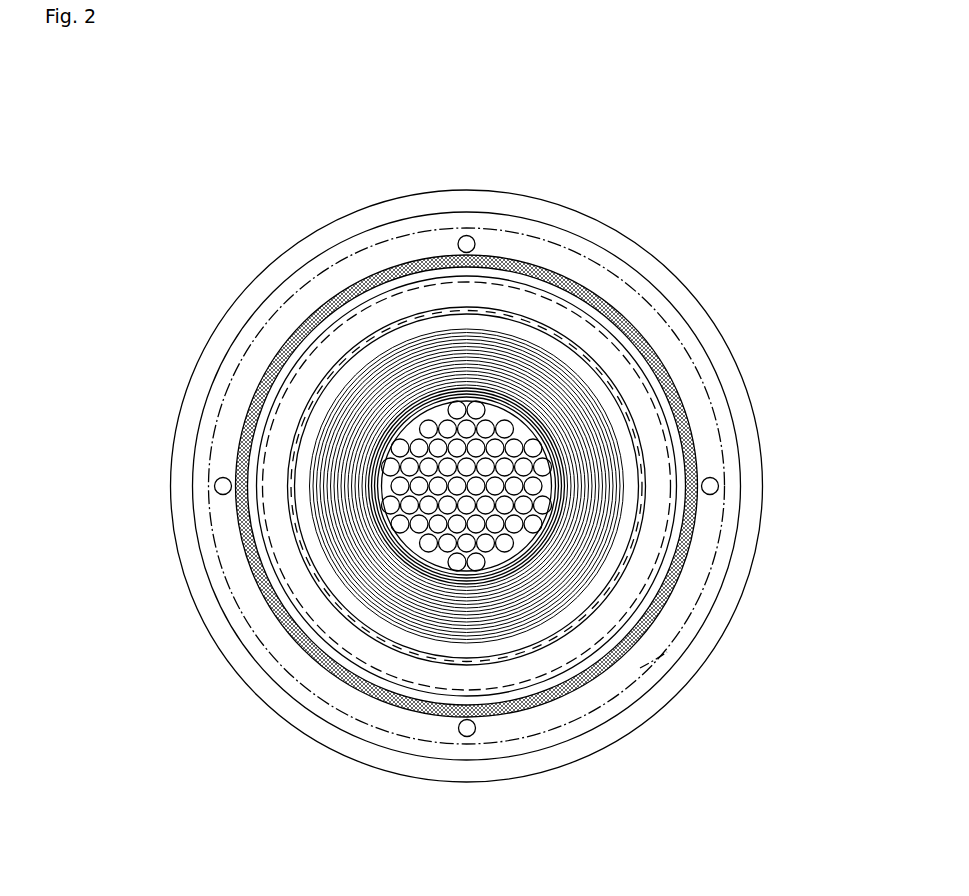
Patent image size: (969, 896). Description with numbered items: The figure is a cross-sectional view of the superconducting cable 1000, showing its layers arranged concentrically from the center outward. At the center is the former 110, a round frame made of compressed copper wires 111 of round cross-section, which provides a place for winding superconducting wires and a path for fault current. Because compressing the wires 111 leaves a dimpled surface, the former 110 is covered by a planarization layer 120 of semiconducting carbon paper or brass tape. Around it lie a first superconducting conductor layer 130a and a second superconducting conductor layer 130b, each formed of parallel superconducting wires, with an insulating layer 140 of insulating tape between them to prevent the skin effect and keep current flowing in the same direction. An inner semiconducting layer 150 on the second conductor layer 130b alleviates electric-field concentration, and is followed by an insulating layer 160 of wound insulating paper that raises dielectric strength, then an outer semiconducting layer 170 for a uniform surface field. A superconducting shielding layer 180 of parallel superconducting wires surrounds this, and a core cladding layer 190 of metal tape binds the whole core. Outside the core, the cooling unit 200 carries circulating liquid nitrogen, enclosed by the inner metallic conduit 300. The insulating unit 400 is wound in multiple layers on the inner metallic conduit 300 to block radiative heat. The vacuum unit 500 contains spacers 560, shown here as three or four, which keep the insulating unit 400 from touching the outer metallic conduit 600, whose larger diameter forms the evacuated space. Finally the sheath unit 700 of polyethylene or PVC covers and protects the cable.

The superconducting cable 1000 is at (232, 188).
The former 110 is at (387, 578).
The copper wires 111 is at (400, 525).
The planarization layer 120 is at (372, 505).
The first superconducting conductor layer 130a is at (367, 453).
The second superconducting conductor layer 130b is at (423, 387).
The insulating layer 140 is at (395, 418).
The inner semiconducting layer 150 is at (470, 380).
The insulating layer 160 is at (530, 352).
The outer semiconducting layer 170 is at (577, 360).
The superconducting shielding layer 180 is at (610, 393).
The core cladding layer 190 is at (637, 443).
The cooling unit 200 is at (670, 473).
The inner metallic conduit 300 is at (680, 537).
The insulating unit 400 is at (663, 613).
The vacuum unit 500 is at (642, 659).
The spacers 560 is at (468, 736).
The outer metallic conduit 600 is at (548, 740).
The sheath unit 700 is at (507, 768).